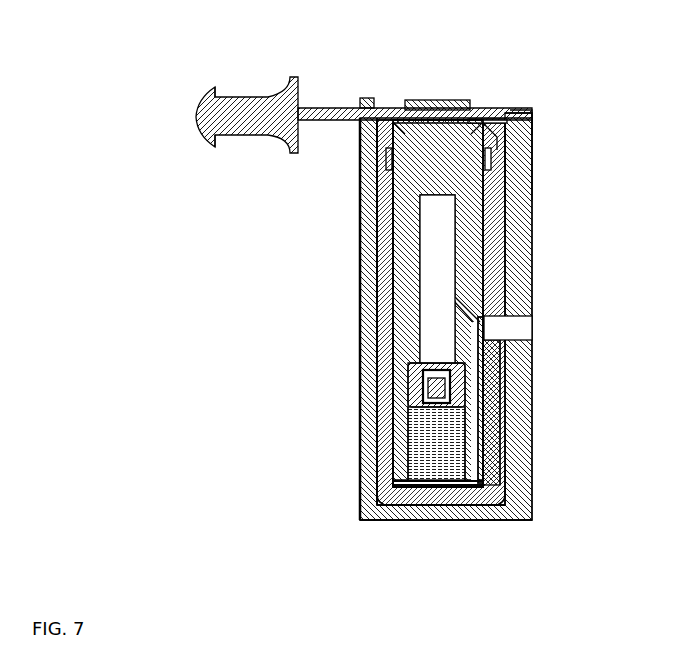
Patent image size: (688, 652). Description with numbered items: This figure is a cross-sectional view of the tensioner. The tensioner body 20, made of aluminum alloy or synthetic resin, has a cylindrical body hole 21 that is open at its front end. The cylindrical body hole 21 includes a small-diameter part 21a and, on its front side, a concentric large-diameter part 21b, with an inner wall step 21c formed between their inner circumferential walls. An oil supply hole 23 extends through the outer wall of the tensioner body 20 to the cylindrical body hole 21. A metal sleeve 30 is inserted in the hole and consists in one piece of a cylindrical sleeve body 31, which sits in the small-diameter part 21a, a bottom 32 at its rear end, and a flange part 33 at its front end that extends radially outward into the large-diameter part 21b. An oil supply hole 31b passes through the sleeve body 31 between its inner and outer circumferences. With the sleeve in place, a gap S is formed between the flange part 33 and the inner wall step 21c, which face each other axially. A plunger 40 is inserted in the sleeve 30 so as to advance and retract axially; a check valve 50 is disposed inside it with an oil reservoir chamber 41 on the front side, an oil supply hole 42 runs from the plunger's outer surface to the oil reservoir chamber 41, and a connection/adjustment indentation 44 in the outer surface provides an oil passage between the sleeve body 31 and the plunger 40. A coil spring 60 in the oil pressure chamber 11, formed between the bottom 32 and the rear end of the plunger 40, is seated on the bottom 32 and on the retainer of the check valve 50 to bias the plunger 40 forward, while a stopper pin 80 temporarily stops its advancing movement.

The stopper pin 80 is at (236, 100).
The plunger 40 is at (447, 100).
The flange part 33 is at (529, 112).
The inner wall step 21c is at (533, 131).
The gap S is at (533, 173).
The sleeve 30 is at (497, 216).
The tensioner body 20 is at (520, 268).
The oil supply hole 23 is at (516, 328).
The oil supply hole 31b is at (500, 347).
The oil supply hole 42 is at (492, 362).
The connection/adjustment indentation 44 is at (480, 428).
The oil pressure chamber 11 is at (470, 512).
The coil spring 60 is at (433, 506).
The bottom 32 is at (382, 508).
The sleeve body 31 is at (385, 452).
The check valve 50 is at (418, 384).
The oil reservoir chamber 41 is at (440, 300).
The small-diameter part 21a is at (360, 224).
The large-diameter part 21b is at (378, 148).
The cylindrical body hole 21 is at (232, 195).